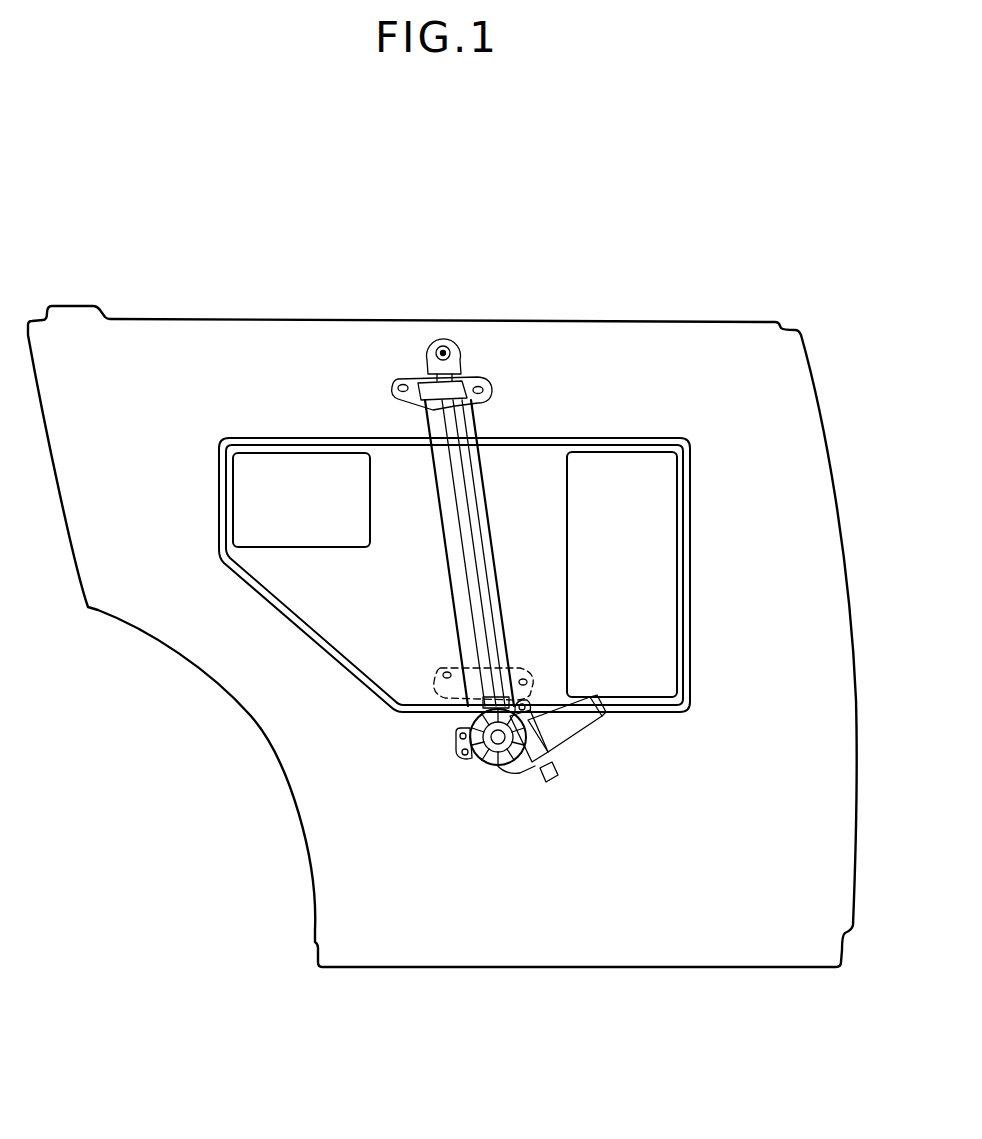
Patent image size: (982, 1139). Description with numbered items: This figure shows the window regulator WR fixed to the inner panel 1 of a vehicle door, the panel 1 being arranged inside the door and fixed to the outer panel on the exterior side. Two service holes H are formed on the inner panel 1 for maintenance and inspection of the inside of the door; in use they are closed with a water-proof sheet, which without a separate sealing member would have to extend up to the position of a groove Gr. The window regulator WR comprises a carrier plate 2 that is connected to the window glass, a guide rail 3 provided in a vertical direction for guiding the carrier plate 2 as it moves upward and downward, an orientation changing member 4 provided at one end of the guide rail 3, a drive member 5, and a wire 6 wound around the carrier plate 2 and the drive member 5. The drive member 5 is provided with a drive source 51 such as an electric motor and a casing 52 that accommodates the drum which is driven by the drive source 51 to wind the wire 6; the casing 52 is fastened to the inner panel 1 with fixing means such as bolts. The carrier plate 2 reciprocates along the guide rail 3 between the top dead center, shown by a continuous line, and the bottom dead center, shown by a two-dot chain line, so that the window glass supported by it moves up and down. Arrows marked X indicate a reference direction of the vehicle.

The inner panel 1 is at (60, 340).
The carrier plate 2 is at (470, 383).
The guide rail 3 is at (460, 463).
The orientation changing member 4 is at (458, 350).
The drive member 5 is at (505, 880).
The drive source 51 is at (600, 735).
The casing 52 is at (473, 757).
The wire 6 is at (370, 493).
The service hole H is at (244, 478).
The groove Gr is at (690, 453).
The window regulator WR is at (418, 516).
The vehicle front direction X is at (437, 307).